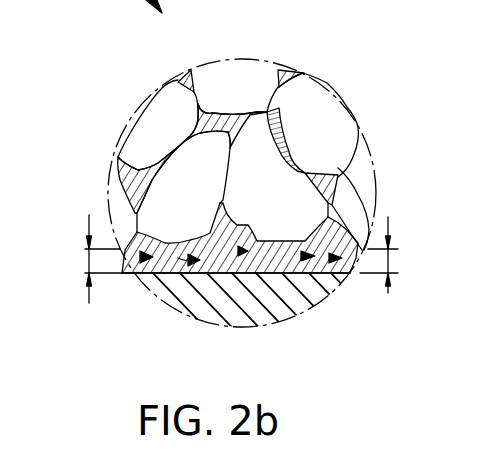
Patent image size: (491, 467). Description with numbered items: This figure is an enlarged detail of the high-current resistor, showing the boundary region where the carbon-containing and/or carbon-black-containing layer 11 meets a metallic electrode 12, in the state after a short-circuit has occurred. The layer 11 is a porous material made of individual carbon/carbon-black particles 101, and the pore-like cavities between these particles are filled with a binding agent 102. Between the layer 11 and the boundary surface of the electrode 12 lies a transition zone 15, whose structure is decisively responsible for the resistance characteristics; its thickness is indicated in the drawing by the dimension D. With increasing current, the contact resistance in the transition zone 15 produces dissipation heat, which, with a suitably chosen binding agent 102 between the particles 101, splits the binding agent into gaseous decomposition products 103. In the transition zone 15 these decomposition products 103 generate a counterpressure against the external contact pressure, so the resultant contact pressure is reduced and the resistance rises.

The carbon-containing and/or carbon-black-containing layer 11 is at (164, 77).
The carbon/carbon-black particles 101 is at (256, 80).
The binding agent 102 is at (338, 185).
The gaseous decomposition products 103 is at (142, 253).
The transition zone 15 is at (88, 263).
The metallic electrode 12 is at (326, 276).
The film thickness D is at (390, 263).